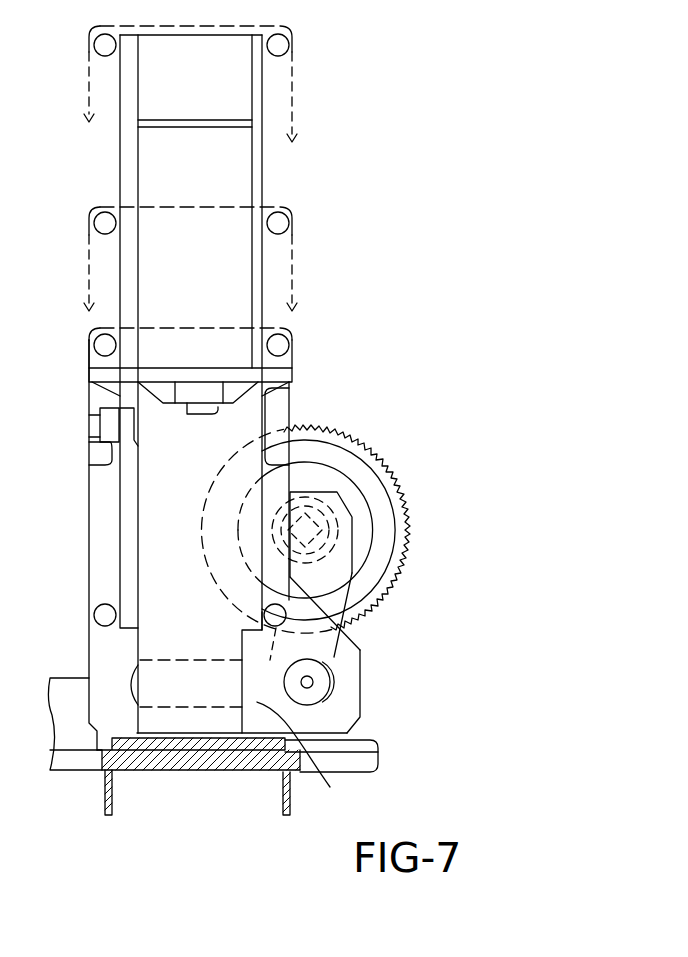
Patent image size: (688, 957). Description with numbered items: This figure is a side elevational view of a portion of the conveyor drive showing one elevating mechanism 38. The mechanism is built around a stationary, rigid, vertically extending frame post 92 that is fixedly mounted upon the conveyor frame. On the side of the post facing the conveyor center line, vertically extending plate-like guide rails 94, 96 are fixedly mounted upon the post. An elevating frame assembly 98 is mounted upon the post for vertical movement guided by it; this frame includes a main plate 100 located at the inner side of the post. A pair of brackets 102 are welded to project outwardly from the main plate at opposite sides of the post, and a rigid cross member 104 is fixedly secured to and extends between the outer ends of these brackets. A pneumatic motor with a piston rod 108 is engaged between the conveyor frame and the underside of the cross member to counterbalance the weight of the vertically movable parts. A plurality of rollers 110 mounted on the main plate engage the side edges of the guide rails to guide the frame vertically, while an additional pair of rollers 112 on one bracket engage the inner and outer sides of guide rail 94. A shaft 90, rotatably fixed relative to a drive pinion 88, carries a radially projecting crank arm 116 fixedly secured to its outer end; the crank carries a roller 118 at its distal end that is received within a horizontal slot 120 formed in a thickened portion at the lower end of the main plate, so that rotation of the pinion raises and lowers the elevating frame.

The elevating mechanism 38 is at (335, 343).
The drive pinion 88 is at (370, 448).
The shaft 90 is at (337, 494).
The frame post 92 is at (228, 235).
The guide rail 94 is at (127, 507).
The guide rail 96 is at (258, 152).
The elevating frame assembly 98 is at (98, 549).
The main plate 100 is at (320, 638).
The bracket 102 is at (107, 394).
The cross member 104 is at (188, 376).
The piston rod 108 is at (213, 415).
The roller 110 is at (100, 337).
The roller 112 is at (138, 440).
The crank arm 116 is at (337, 570).
The roller 118 is at (322, 678).
The horizontal slot 120 is at (319, 754).